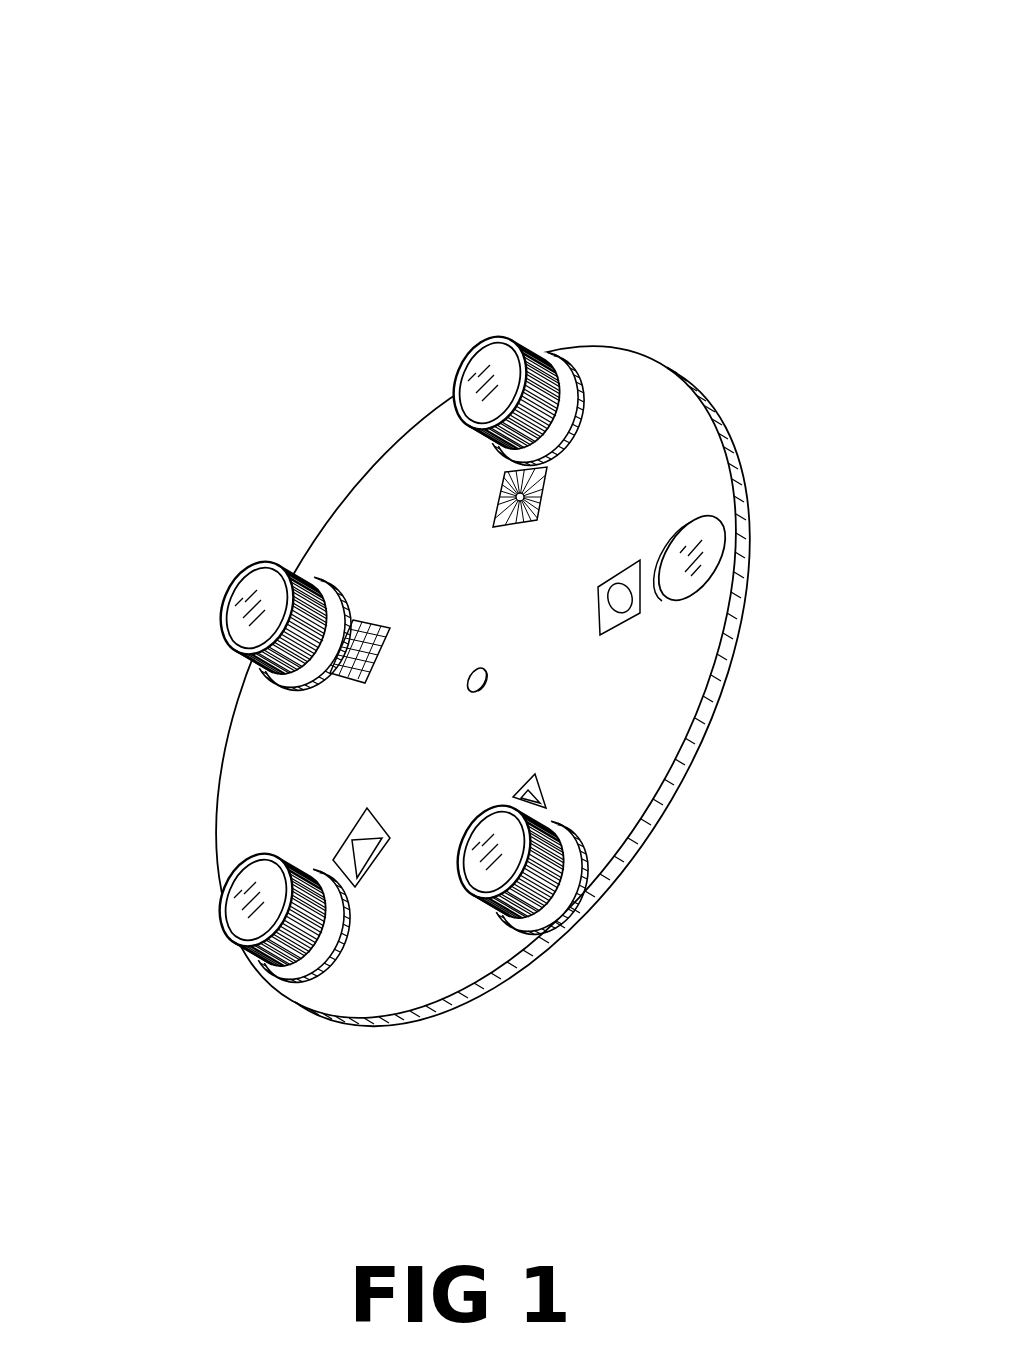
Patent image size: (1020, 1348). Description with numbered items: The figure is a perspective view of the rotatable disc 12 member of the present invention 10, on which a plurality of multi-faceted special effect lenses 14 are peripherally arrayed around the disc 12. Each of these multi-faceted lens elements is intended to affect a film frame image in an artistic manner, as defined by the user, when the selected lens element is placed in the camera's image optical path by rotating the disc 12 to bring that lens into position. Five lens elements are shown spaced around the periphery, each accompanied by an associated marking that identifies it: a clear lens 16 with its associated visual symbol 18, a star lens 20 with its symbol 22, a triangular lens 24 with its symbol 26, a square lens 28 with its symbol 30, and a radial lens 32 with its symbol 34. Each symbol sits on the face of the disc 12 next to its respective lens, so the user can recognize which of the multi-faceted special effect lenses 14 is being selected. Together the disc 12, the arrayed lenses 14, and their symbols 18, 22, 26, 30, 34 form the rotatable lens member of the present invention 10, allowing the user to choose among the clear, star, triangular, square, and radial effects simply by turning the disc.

The present invention 10 is at (603, 177).
The rotatable disc 12 is at (743, 550).
The multi-faceted special effect lenses 14 is at (417, 153).
The clear lens 16 is at (693, 560).
The visual symbol 18 is at (617, 577).
The star lens 20 is at (553, 813).
The symbol 22 is at (528, 793).
The triangular lens 24 is at (245, 928).
The symbol 26 is at (367, 848).
The square lens 28 is at (260, 590).
The symbol 30 is at (370, 630).
The radial lens 32 is at (472, 393).
The symbol 34 is at (505, 493).